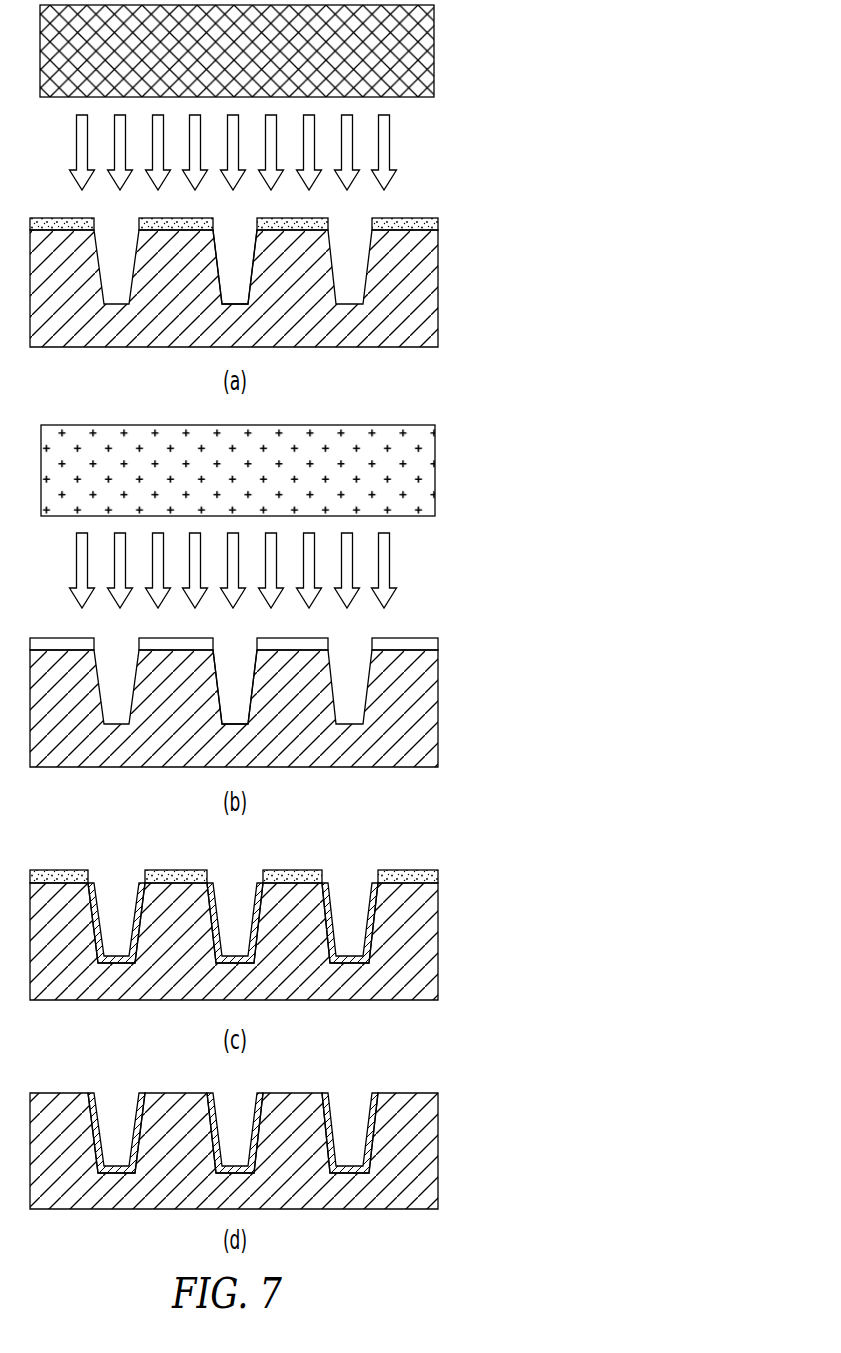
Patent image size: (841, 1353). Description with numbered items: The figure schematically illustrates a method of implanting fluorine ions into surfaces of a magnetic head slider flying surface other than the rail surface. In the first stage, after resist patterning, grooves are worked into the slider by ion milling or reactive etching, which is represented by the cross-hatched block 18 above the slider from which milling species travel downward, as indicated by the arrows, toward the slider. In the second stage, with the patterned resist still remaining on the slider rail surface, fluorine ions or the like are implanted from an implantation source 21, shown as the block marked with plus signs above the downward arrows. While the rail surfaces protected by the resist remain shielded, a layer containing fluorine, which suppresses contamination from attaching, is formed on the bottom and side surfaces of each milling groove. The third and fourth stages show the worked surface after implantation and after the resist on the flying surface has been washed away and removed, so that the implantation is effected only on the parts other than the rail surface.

The etching plasma / etch source 18 is at (431, 71).
The ion implantation source 21 is at (431, 481).